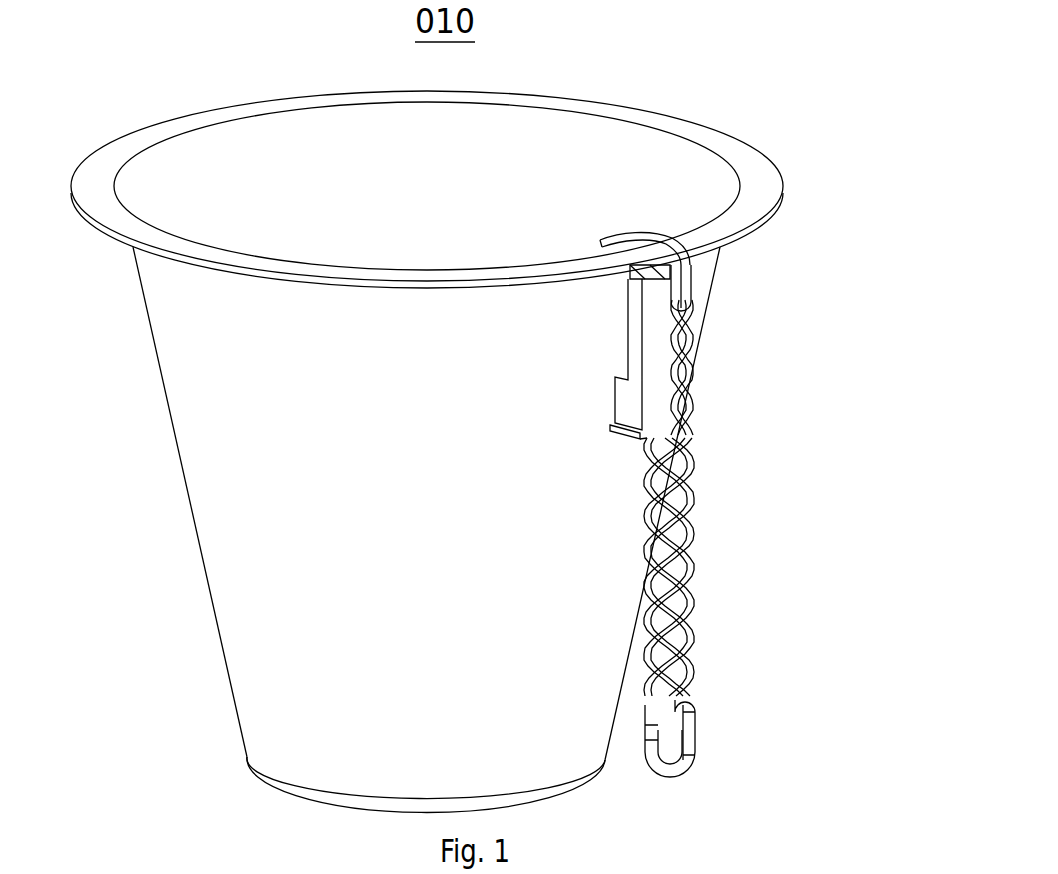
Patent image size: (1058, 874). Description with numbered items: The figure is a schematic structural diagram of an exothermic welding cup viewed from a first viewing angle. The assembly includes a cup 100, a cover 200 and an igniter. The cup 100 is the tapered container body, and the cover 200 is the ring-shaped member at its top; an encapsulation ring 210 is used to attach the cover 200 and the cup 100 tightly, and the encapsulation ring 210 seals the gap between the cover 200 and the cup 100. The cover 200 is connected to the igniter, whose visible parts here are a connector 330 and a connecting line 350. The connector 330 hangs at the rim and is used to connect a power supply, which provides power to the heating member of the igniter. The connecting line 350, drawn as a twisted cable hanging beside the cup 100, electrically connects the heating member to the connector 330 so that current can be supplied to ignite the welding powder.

The cup 100 is at (260, 510).
The cover 200 is at (558, 150).
The encapsulation ring 210 is at (765, 187).
The connector 330 is at (660, 386).
The connecting line 350 is at (682, 475).